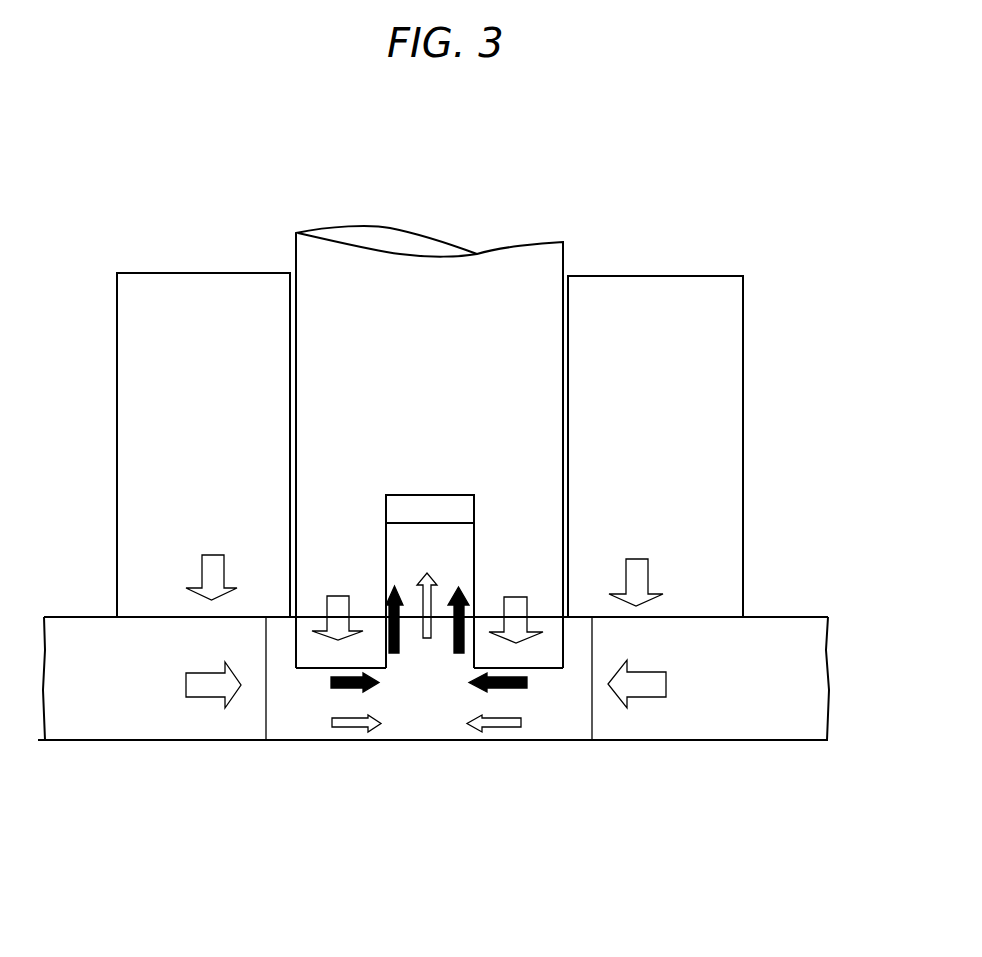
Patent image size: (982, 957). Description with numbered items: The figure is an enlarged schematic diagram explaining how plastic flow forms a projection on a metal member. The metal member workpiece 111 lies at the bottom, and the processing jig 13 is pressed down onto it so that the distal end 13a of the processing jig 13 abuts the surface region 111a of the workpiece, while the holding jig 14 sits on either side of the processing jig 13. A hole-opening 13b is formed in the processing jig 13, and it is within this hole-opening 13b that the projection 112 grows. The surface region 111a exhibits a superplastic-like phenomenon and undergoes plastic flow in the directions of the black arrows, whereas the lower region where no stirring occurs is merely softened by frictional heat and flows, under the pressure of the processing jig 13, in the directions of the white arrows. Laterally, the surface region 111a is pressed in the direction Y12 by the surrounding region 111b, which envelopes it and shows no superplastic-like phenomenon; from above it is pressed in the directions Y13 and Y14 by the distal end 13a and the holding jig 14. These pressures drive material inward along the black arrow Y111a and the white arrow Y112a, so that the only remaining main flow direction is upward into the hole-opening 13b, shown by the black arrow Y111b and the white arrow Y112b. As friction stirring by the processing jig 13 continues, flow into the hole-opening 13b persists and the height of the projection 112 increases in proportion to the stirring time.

The processing jig 13 is at (517, 270).
The distal end 13a is at (302, 672).
The hole-opening 13b is at (434, 508).
The projection 112 is at (398, 548).
The holding jig 14 is at (688, 303).
The metal member workpiece 111 is at (798, 754).
The surface region 111a is at (557, 718).
The surrounding region 111b is at (72, 724).
The lateral pressing direction Y12 is at (203, 686).
The pressing direction by distal end Y13 is at (342, 607).
The pressing direction by holding jig Y14 is at (212, 563).
The black arrow Y111a is at (343, 692).
The black arrow Y111b is at (398, 657).
The white arrow Y112a is at (502, 728).
The white arrow Y112b is at (424, 653).